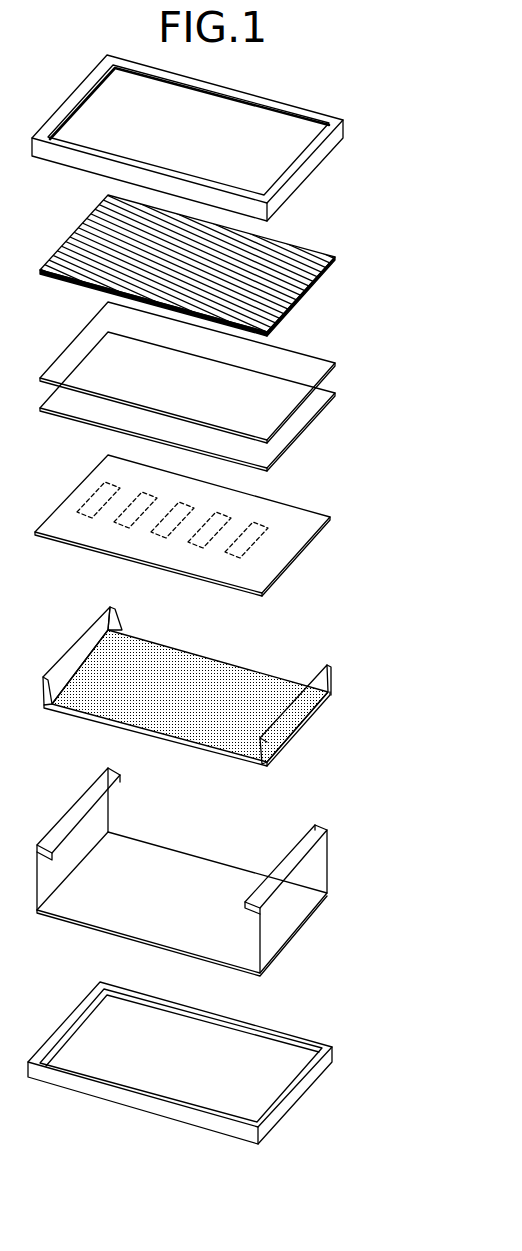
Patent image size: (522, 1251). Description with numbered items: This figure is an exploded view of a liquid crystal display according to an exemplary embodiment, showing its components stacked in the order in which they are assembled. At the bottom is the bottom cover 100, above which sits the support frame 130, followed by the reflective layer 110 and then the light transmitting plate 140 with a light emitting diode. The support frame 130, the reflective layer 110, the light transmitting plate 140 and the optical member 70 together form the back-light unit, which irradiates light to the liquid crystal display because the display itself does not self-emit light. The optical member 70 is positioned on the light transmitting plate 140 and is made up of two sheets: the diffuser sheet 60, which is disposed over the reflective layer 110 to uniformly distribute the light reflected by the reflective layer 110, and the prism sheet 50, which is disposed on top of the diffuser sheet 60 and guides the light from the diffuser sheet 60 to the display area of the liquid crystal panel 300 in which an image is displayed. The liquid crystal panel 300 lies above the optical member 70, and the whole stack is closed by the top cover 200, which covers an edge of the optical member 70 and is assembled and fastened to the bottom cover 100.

The top cover 200 is at (327, 150).
The liquid crystal panel 300 is at (312, 277).
The prism sheet 50 is at (325, 368).
The diffuser sheet 60 is at (325, 397).
The optical member 70 is at (231, 386).
The light transmitting plate 140 is at (313, 527).
The reflective layer 110 is at (302, 717).
The support frame 130 is at (295, 923).
The bottom cover 100 is at (308, 1082).